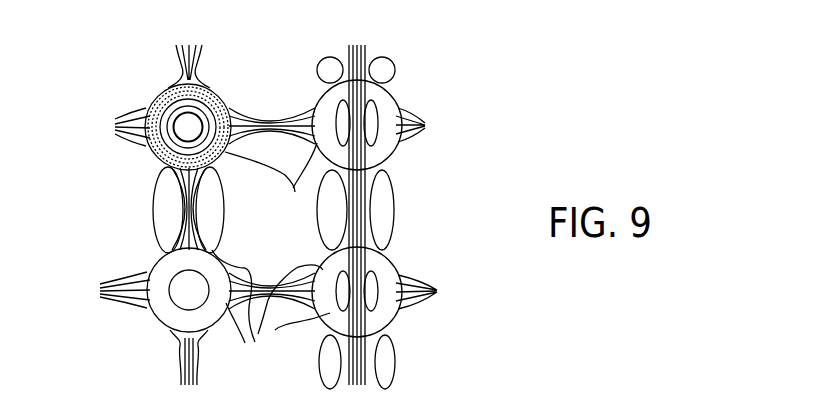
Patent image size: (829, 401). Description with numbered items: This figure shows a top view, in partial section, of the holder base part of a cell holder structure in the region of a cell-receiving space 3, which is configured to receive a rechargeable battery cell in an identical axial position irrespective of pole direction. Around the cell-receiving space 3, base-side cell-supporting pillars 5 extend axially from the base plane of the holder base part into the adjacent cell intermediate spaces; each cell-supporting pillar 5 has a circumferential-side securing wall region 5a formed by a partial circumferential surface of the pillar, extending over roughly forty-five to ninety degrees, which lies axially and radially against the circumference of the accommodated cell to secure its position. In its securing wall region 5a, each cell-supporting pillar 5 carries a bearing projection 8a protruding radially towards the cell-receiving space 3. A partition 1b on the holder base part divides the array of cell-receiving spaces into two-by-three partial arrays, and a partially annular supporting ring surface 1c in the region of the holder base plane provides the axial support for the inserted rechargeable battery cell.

The partition 1b is at (362, 160).
The supporting ring surface 1c is at (377, 203).
The cell-receiving space 3 is at (264, 153).
The cell-supporting pillar 5 is at (393, 106).
The securing wall region 5a is at (271, 261).
The bearing projection 8a is at (230, 260).